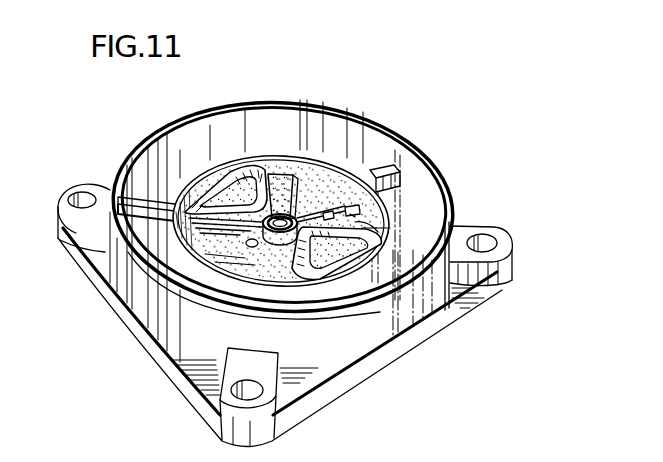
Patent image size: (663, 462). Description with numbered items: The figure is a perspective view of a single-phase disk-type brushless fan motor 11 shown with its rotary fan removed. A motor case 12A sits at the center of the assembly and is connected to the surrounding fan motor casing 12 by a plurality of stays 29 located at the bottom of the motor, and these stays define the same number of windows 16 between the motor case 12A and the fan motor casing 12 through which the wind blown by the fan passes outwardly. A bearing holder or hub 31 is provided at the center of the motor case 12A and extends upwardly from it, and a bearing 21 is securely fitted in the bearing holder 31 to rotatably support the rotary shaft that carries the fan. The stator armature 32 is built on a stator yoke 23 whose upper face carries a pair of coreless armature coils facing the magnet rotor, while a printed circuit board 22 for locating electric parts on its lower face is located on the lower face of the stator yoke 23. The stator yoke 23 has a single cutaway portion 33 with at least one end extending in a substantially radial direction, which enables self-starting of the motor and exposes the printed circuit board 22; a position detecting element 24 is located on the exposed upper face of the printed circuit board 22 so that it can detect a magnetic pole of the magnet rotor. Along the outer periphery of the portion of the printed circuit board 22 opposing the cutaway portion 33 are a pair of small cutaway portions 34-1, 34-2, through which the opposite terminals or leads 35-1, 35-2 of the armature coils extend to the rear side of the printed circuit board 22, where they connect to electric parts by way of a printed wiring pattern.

The single-phase disk-type brushless fan motor 11 is at (383, 86).
The fan motor casing 12 is at (432, 153).
The motor case 12A is at (397, 262).
The windows 16 is at (420, 226).
The bearing 21 is at (250, 262).
The printed circuit board 22 is at (375, 230).
The stator yoke 23 is at (240, 240).
The position detecting element 24 is at (296, 268).
The stays 29 is at (143, 200).
The bearing holder 31 is at (262, 297).
The stator armature 32 is at (277, 163).
The cutaway portion 33 is at (308, 192).
The small cutaway portion 34-1 is at (357, 180).
The small cutaway portion 34-2 is at (352, 212).
The terminal or lead 35-1 is at (295, 178).
The terminal or lead 35-2 is at (337, 230).